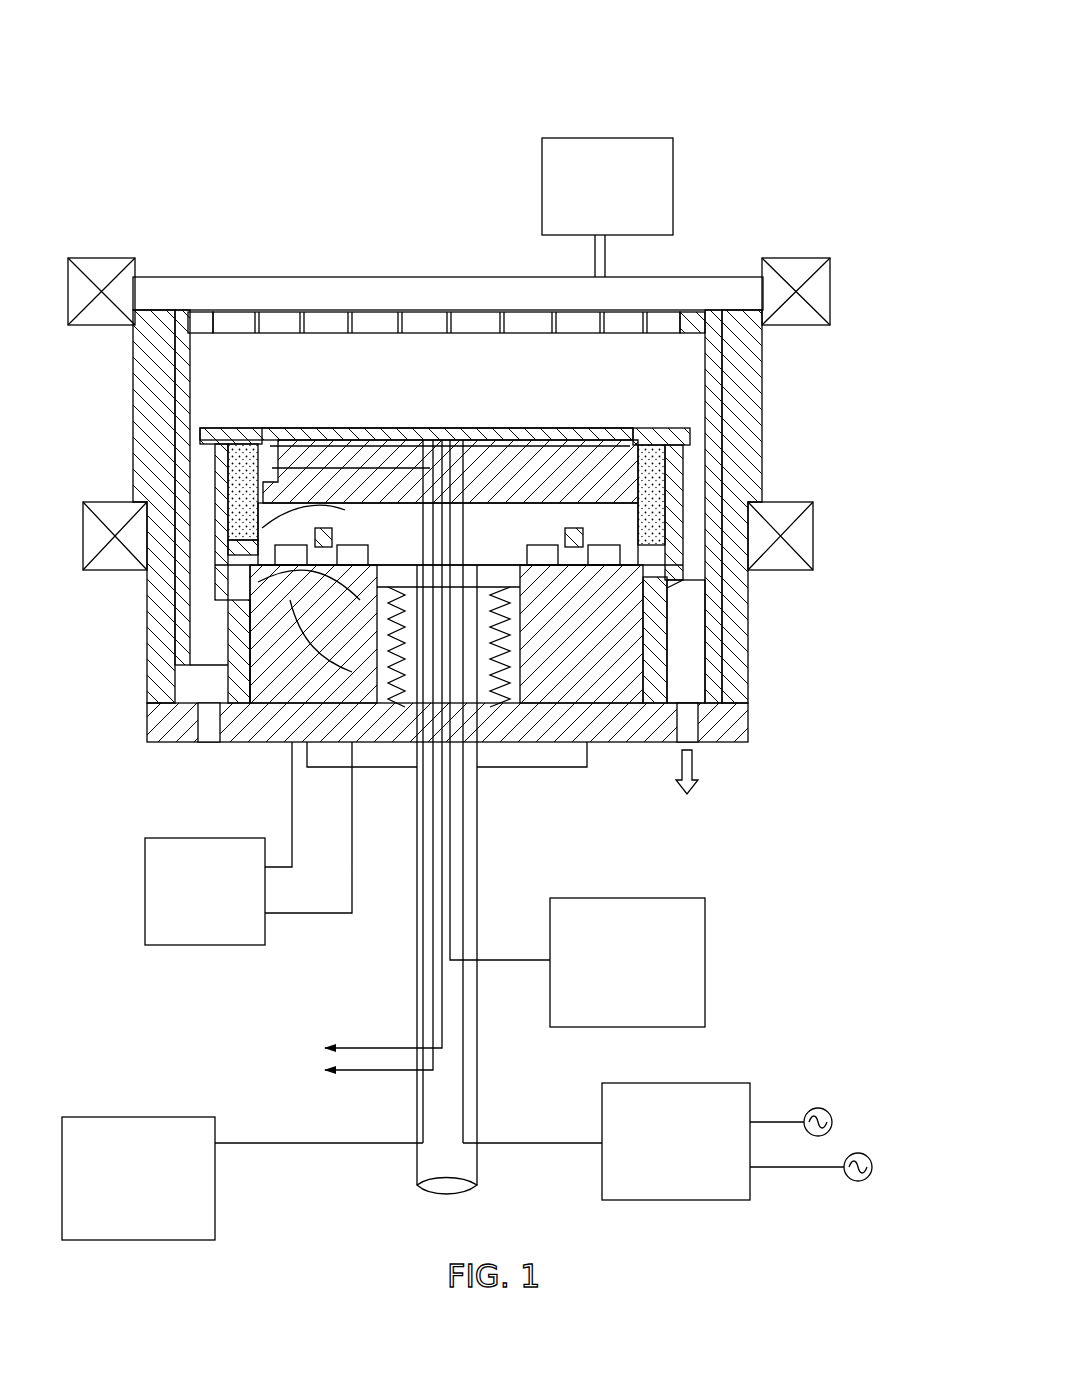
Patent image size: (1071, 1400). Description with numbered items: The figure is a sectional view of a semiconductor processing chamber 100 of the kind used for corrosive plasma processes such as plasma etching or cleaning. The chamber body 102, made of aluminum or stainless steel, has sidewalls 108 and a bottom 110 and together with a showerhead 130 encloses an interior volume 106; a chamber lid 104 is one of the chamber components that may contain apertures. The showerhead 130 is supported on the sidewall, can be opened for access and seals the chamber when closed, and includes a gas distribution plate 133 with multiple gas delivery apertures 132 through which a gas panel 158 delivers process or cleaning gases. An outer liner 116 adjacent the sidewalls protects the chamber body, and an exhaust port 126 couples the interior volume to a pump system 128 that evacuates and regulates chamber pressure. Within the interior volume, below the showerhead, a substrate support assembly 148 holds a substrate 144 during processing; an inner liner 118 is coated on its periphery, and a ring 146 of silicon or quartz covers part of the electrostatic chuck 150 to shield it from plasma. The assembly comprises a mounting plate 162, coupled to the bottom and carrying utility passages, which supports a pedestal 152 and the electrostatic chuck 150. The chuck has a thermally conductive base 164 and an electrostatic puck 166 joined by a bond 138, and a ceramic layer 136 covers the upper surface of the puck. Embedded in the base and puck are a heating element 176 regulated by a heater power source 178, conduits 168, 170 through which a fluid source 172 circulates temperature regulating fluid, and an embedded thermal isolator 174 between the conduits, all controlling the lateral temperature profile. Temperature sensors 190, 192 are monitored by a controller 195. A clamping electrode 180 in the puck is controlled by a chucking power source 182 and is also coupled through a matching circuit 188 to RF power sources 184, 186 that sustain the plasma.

The processing chamber 100 is at (764, 75).
The chamber body 102 is at (851, 390).
The chamber lid 104 is at (734, 276).
The interior volume 106 is at (270, 383).
The sidewalls 108 is at (740, 476).
The bottom 110 is at (250, 722).
The outer liner 116 is at (713, 633).
The inner liner 118 is at (660, 676).
The exhaust port 126 is at (700, 722).
The pump system 128 is at (717, 804).
The showerhead 130 is at (293, 284).
The gas delivery apertures 132 is at (402, 322).
The gas distribution plate 133 is at (222, 325).
The ceramic layer 136 is at (524, 430).
The bond 138 is at (228, 517).
The substrate 144 is at (603, 428).
The ring 146 is at (648, 430).
The substrate support assembly 148 is at (599, 692).
The electrostatic chuck 150 is at (622, 490).
The pedestal 152 is at (386, 940).
The gas panel 158 is at (626, 228).
The mounting plate 162 is at (597, 649).
The thermally conductive base 164 is at (529, 539).
The electrostatic puck 166 is at (607, 484).
The conduit 168 is at (255, 650).
The conduit 170 is at (258, 582).
The fluid source 172 is at (226, 924).
The embedded thermal isolator 174 is at (245, 556).
The heating element 176 is at (281, 478).
The heater power source 178 is at (160, 1227).
The clamping electrode 180 is at (500, 443).
The chucking power source 182 is at (649, 1008).
The RF power source 184 is at (833, 1113).
The RF power source 186 is at (872, 1161).
The matching circuit 188 is at (697, 1177).
The temperature sensor 190 is at (438, 438).
The temperature sensor 192 is at (347, 432).
The controller 195 is at (246, 1057).